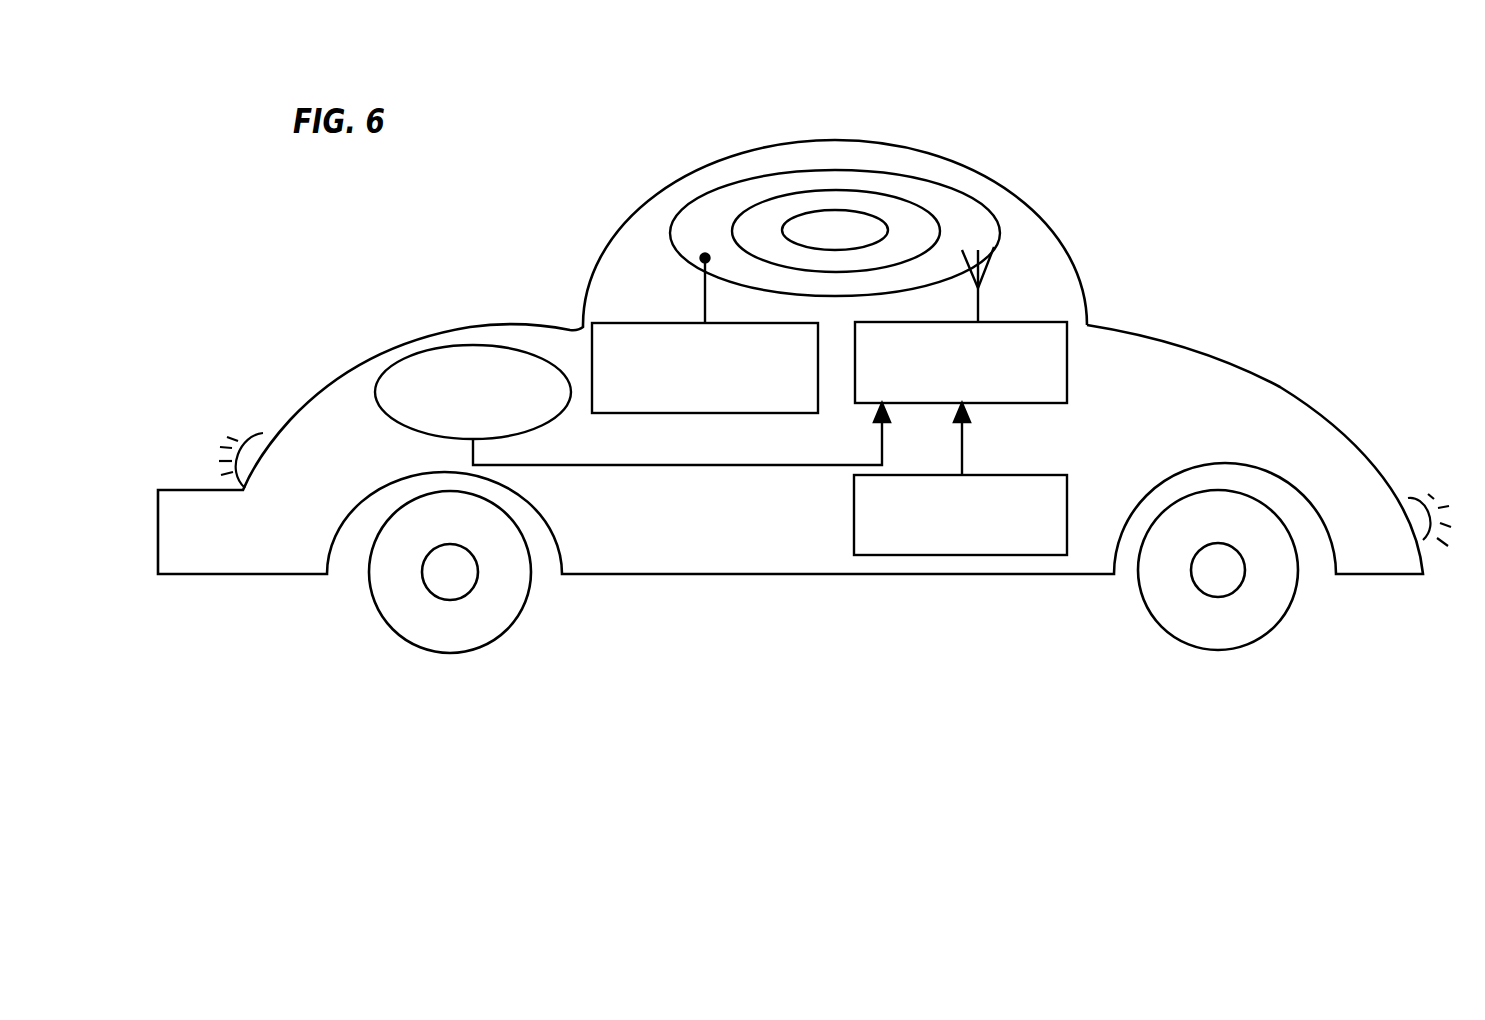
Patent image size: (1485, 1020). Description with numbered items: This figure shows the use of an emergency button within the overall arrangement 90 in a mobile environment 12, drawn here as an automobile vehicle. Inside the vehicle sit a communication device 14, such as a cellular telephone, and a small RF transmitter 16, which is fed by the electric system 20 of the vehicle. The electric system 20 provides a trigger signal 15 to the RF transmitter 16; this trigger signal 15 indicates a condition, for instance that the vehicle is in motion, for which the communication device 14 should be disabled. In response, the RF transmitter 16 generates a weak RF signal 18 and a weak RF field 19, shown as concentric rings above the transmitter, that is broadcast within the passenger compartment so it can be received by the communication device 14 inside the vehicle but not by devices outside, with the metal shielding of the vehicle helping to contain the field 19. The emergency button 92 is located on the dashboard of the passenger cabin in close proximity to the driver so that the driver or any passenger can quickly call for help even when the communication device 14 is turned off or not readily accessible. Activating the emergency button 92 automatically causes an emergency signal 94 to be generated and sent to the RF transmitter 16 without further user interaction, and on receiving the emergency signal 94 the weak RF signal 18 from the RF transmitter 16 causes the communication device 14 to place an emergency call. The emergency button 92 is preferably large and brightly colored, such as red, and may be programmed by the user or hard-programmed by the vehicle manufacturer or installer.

The environment 12 is at (1197, 368).
The communication device 14 is at (678, 415).
The trigger signal 15 is at (963, 443).
The RF transmitter 16 is at (1068, 363).
The weak RF signal 18 is at (982, 296).
The weak RF field 19 is at (882, 178).
The electric system 20 is at (853, 493).
The emergency notification system 90 is at (1114, 192).
The emergency button 92 is at (392, 414).
The emergency signal 94 is at (583, 467).